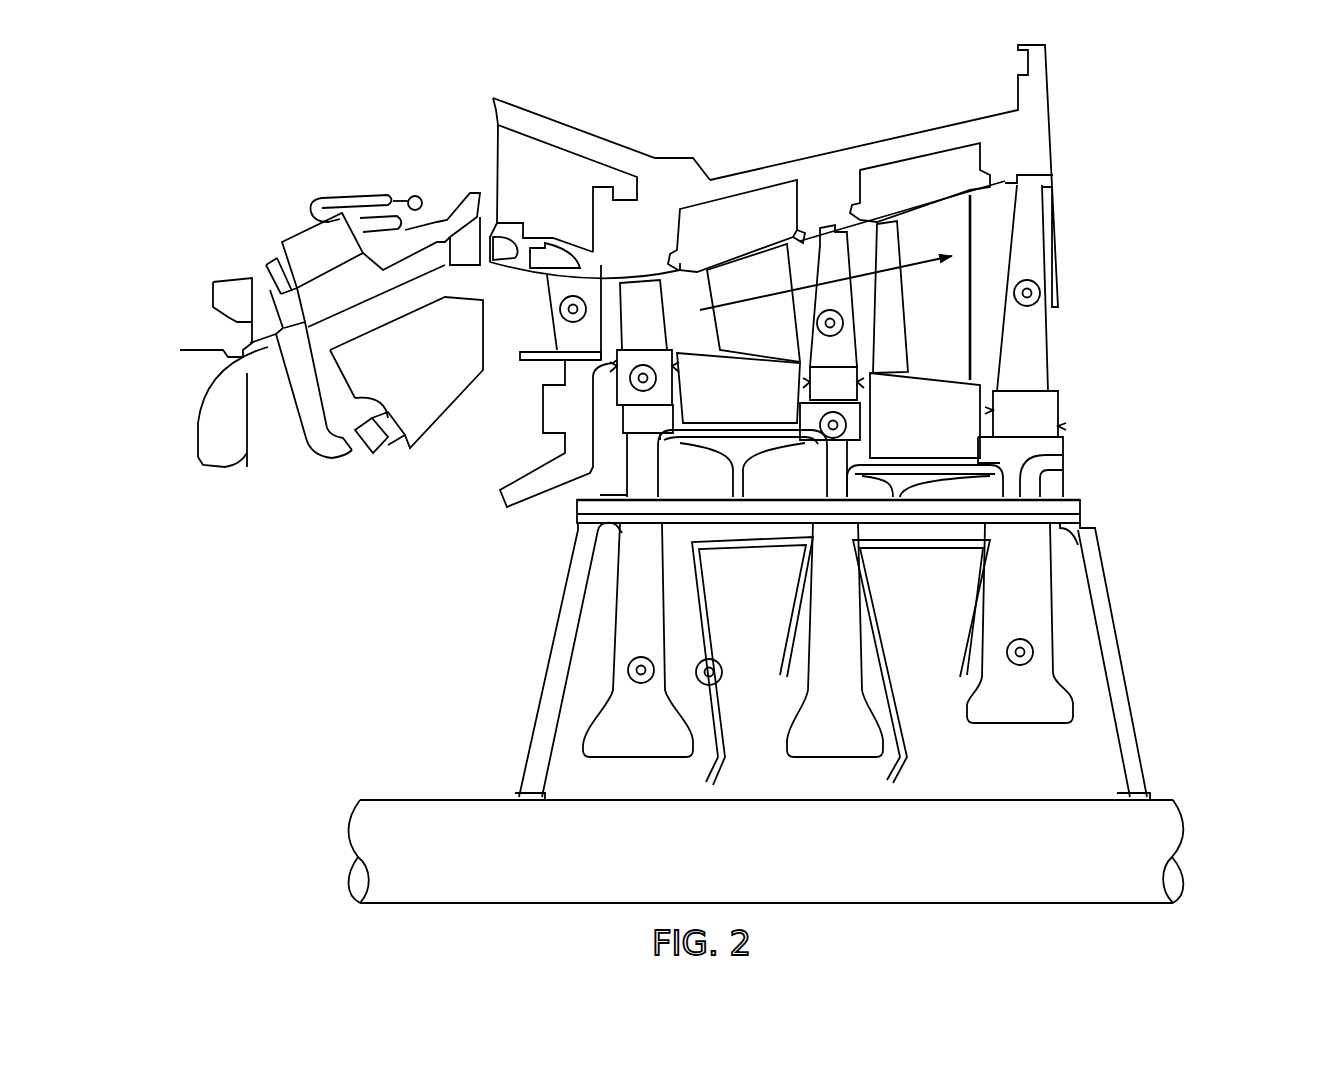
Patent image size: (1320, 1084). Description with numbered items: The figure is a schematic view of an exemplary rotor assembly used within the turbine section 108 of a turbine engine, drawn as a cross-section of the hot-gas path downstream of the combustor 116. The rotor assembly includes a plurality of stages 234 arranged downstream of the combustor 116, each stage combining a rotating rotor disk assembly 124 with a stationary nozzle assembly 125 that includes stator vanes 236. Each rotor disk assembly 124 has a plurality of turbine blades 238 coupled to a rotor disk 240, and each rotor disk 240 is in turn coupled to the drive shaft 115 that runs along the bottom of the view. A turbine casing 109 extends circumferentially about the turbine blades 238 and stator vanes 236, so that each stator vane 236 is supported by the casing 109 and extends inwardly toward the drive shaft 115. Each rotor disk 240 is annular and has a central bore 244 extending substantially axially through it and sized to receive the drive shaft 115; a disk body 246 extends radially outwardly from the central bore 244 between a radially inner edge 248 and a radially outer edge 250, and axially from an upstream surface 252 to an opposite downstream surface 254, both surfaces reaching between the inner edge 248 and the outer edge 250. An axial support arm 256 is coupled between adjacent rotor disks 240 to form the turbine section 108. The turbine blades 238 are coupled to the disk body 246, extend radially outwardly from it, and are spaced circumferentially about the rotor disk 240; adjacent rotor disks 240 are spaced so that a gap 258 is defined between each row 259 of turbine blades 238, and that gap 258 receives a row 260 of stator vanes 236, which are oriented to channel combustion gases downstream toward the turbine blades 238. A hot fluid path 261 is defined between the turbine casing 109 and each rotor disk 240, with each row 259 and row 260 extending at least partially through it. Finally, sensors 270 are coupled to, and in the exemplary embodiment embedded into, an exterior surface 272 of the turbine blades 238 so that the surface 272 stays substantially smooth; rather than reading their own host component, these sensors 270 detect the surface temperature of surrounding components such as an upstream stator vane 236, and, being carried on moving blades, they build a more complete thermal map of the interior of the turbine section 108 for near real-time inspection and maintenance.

The turbine section 108 is at (418, 103).
The turbine casing 109 is at (905, 130).
The drive shaft 115 is at (1047, 880).
The combustor 116 is at (282, 190).
The rotor disk assembly 124 is at (1076, 478).
The nozzle assembly 125 is at (995, 212).
The stages 234 is at (754, 212).
The stator vanes 236 is at (766, 289).
The turbine blades 238 is at (1060, 370).
The rotor disk 240 is at (597, 633).
The central bore 244 is at (1082, 735).
The disk body 246 is at (661, 748).
The radially inner edge 248 is at (1006, 736).
The radially outer edge 250 is at (615, 546).
The upstream surface 252 is at (602, 727).
The downstream surface 254 is at (678, 617).
The axial support arm 256 is at (1040, 452).
The gap 258 is at (995, 247).
The row of turbine blades 259 is at (623, 255).
The row of stator vanes 260 is at (737, 215).
The hot fluid path 261 is at (910, 258).
The sensors 270 is at (562, 301).
The exterior surface 272 is at (622, 362).